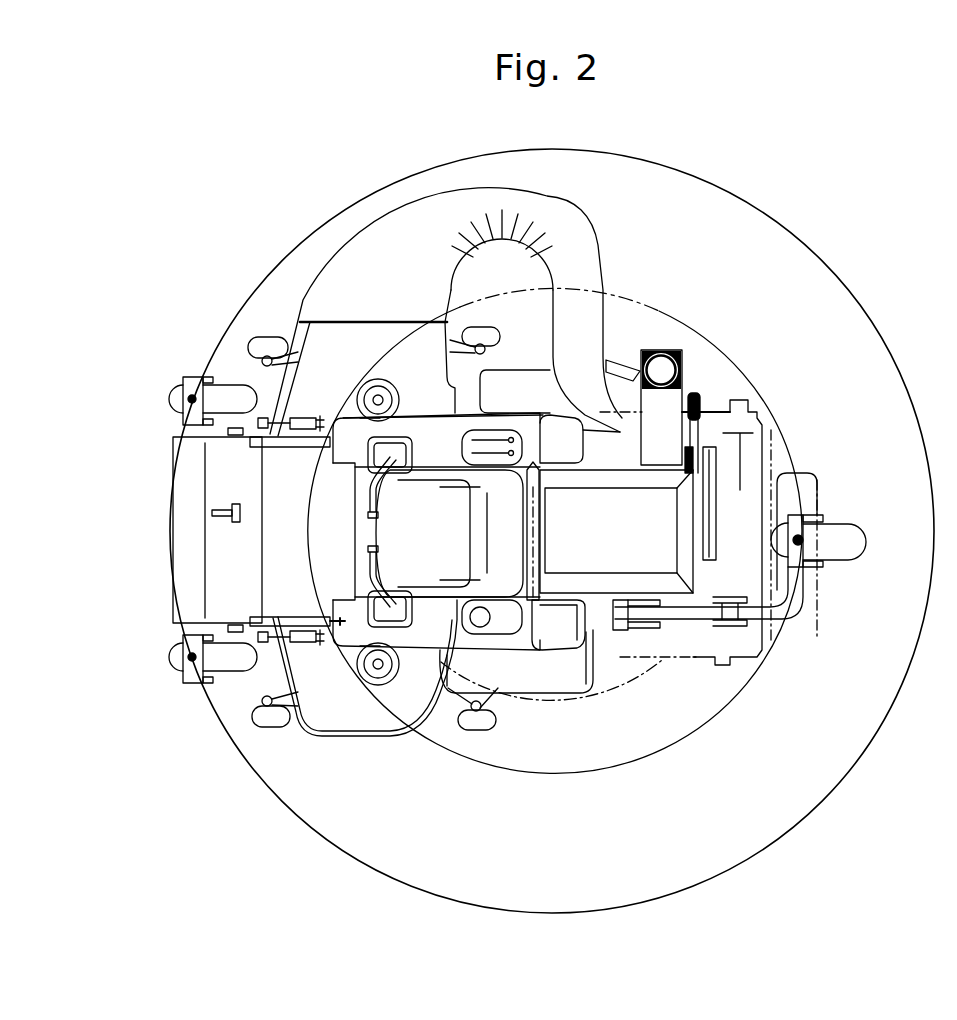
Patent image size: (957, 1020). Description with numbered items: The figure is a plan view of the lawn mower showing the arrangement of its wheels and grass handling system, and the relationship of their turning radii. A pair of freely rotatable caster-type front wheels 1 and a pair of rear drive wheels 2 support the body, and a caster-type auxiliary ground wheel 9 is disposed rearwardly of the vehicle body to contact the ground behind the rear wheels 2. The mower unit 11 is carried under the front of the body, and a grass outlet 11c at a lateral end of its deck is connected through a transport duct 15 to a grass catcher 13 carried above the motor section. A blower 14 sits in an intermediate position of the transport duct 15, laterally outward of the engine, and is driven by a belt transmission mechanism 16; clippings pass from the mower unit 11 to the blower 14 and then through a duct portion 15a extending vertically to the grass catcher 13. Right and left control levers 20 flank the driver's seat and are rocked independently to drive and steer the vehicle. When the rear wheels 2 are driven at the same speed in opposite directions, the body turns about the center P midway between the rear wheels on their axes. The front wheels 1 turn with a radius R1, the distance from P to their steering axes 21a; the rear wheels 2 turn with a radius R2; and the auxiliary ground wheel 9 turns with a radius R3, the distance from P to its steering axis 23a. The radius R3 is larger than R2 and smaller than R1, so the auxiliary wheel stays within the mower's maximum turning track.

The turning radius of the front wheels R1 is at (282, 262).
The turning radius of the rear wheels R2 is at (578, 708).
The turning radius of the auxiliary ground wheel R3 is at (661, 750).
The front wheels 1 is at (170, 398).
The rear drive wheels 2 is at (530, 375).
The auxiliary ground wheel 9 is at (848, 557).
The mower unit 11 is at (387, 738).
The grass outlet 11c is at (346, 326).
The grass catcher 13 is at (697, 652).
The blower 14 is at (662, 440).
The transport duct 15 is at (590, 258).
The duct portion 15a is at (682, 352).
The belt transmission mechanism 16 is at (712, 485).
The control levers 20 is at (357, 497).
The steering axis 21a is at (190, 393).
The steering axis of the auxiliary ground wheel 23a is at (808, 573).
The turn center P is at (550, 527).